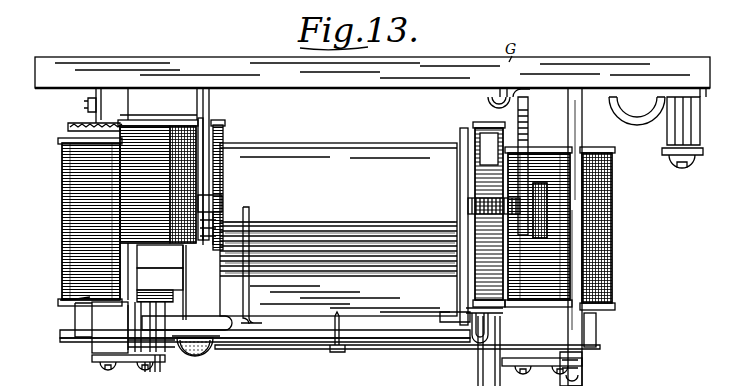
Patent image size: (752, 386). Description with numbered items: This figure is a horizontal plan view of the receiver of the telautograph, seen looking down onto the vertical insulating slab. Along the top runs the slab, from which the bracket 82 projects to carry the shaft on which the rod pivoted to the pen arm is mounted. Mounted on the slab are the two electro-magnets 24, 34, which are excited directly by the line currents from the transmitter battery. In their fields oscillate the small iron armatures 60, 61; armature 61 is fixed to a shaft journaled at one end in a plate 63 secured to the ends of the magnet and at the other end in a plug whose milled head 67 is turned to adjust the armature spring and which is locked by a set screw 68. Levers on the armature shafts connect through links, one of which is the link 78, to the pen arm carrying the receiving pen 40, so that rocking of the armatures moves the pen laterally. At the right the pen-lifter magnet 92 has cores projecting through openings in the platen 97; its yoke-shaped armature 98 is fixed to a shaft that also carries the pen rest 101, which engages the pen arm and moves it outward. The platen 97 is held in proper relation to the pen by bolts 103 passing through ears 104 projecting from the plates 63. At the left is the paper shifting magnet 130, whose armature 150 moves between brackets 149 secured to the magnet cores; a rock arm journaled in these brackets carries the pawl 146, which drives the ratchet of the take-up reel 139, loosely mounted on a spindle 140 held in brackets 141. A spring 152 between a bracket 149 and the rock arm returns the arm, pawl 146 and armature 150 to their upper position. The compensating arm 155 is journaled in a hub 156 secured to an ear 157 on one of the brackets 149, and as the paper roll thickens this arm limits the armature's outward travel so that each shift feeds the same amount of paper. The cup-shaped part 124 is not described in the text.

The electro-magnet 24 is at (612, 252).
The electro-magnet 34 is at (62, 248).
The receiving pen 40 is at (337, 352).
The armature 60 is at (597, 338).
The armature 61 is at (75, 326).
The plate 63 is at (92, 357).
The milled head 67 is at (68, 127).
The set screw 68 is at (88, 103).
The link 78 is at (265, 349).
The bracket 82 is at (586, 150).
The pen-lifter magnet 92 is at (473, 302).
The platen 97 is at (448, 317).
The armature 98 is at (478, 332).
The pen rest 101 is at (398, 342).
The bolt 103 is at (160, 365).
The ear 104 is at (150, 364).
The cup 124 is at (213, 352).
The paper shifting magnet 130 is at (155, 111).
The take-up reel 139 is at (460, 135).
The spindle 140 is at (214, 203).
The bracket 141 is at (209, 107).
The pawl 146 is at (225, 123).
The bracket 149 is at (80, 299).
The armature 150 is at (160, 285).
The spring 152 is at (198, 248).
The arm 155 is at (249, 216).
The hub 156 is at (197, 320).
The ear 157 is at (178, 310).